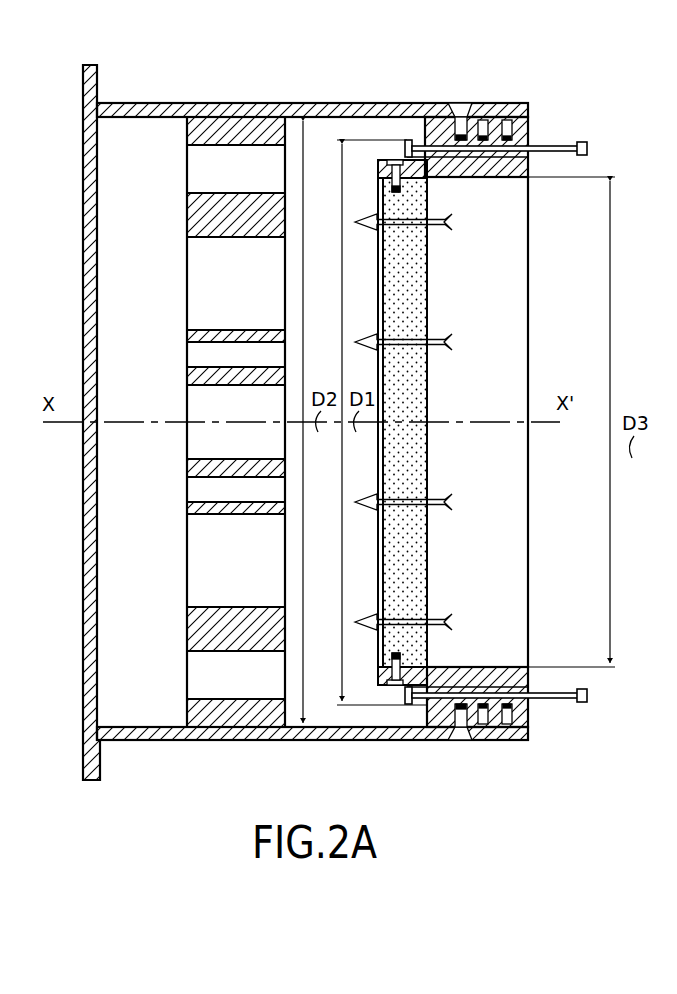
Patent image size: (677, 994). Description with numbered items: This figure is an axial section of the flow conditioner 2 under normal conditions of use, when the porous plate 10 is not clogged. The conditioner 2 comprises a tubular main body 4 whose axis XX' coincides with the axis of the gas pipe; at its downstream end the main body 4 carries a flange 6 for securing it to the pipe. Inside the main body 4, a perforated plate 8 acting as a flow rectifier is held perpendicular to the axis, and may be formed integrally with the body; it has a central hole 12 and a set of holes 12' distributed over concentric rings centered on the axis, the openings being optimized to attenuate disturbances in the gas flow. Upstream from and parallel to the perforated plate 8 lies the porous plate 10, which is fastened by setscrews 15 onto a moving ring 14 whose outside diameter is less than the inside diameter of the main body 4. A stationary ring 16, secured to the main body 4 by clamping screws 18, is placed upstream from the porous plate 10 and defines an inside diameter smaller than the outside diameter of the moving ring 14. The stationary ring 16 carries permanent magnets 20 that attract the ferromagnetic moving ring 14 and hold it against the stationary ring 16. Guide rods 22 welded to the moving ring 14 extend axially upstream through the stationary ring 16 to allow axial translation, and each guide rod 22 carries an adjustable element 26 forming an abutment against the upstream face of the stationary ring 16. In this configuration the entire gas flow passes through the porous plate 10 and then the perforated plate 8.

The flow conditioner 2 is at (305, 396).
The tubular main body 4 is at (145, 103).
The flange 6 is at (98, 75).
The perforated plate 8 is at (204, 422).
The porous plate 10 is at (418, 265).
The central hole 12 is at (205, 407).
The holes 12' is at (205, 422).
The moving ring 14 is at (386, 679).
The setscrews 15 is at (397, 160).
The stationary ring 16 is at (528, 125).
The clamping screws 18 is at (508, 730).
The permanent magnet 20 is at (440, 683).
The guide rod 22 is at (530, 174).
The adjustable element 26 is at (578, 143).